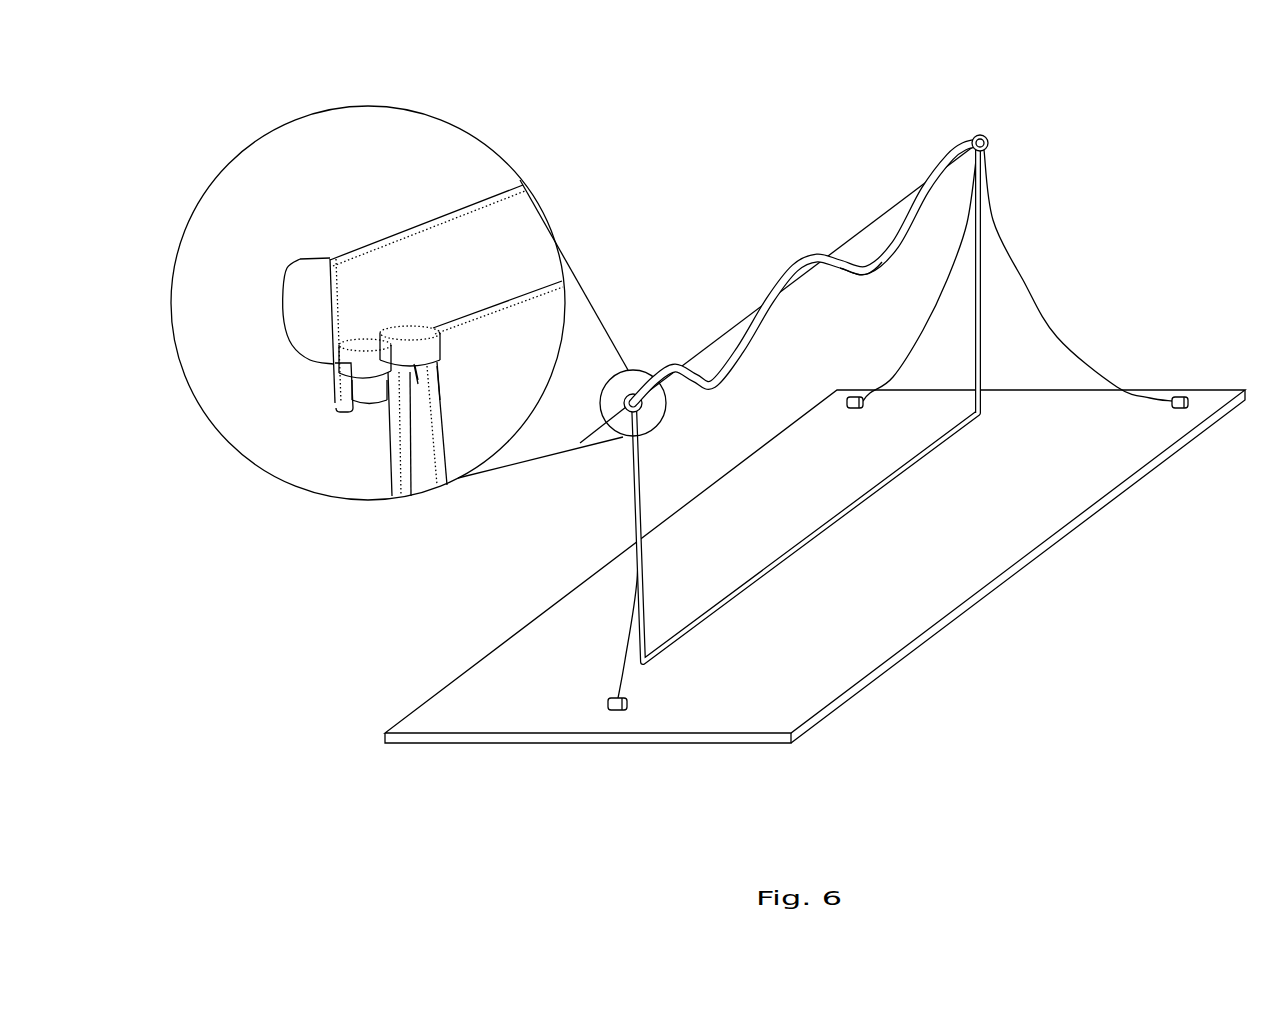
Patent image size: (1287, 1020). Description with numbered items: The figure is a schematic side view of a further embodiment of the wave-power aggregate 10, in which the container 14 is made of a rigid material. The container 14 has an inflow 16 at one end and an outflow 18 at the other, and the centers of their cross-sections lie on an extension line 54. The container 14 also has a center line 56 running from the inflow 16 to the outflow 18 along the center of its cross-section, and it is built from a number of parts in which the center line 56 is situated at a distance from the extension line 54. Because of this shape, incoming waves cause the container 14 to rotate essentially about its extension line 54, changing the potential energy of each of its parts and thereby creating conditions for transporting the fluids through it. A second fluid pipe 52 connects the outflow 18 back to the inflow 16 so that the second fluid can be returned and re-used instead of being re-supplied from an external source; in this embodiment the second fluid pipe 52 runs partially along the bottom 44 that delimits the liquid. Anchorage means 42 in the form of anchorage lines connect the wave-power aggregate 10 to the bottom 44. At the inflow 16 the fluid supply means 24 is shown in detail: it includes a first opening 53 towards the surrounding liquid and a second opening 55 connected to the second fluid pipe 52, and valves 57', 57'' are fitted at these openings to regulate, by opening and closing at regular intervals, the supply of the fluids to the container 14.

The wave-power aggregate 10 is at (733, 203).
The container 14 is at (827, 254).
The inflow 16 is at (634, 398).
The outflow 18 is at (973, 139).
The fluid supply means 24 is at (280, 373).
The anchorage means 42 is at (1058, 338).
The bottom 44 is at (951, 523).
The second fluid pipe 52 is at (983, 262).
The first opening 53 is at (365, 408).
The extension line 54 is at (985, 140).
The second opening 55 is at (414, 368).
The center line 56 is at (865, 268).
The valve 57' is at (370, 317).
The valve 57'' is at (425, 300).